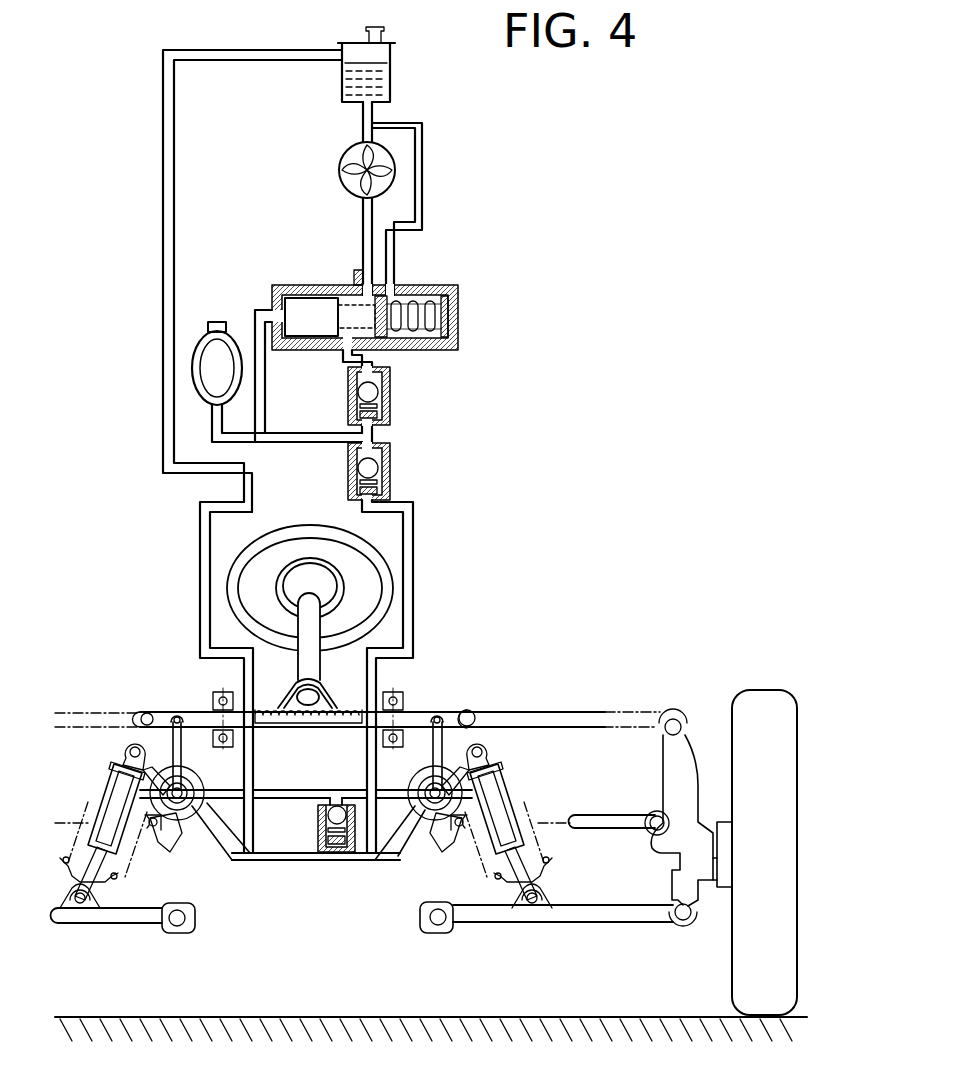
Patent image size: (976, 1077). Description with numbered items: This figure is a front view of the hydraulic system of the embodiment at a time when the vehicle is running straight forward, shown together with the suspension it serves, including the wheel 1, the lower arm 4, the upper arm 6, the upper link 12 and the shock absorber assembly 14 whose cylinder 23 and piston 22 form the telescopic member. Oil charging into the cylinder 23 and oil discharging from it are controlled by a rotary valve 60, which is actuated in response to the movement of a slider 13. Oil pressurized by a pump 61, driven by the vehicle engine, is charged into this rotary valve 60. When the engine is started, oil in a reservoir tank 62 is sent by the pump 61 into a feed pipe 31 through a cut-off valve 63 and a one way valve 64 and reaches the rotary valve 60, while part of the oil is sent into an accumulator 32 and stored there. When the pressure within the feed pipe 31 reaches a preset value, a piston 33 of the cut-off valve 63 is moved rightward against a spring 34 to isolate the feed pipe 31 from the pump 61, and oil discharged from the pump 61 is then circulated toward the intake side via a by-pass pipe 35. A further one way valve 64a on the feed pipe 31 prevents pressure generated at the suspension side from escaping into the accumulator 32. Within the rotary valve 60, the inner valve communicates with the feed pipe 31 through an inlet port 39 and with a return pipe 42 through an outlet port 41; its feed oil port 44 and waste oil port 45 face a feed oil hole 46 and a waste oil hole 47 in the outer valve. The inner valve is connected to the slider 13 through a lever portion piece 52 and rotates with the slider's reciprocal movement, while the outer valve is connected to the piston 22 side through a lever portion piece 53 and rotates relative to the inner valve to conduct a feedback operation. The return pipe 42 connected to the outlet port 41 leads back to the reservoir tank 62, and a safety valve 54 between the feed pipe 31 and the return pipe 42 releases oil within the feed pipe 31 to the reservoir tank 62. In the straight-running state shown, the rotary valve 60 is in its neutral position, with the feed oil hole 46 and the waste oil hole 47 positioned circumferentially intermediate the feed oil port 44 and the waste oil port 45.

The wheel 1 is at (760, 706).
The lower suspension arm 4 is at (580, 923).
The upper suspension arm 6 is at (617, 816).
The upper link 12 is at (626, 710).
The slider 13 is at (421, 712).
The shock absorber assembly 14 is at (532, 817).
The piston 22 is at (500, 770).
The cylinder 23 is at (478, 757).
The feed pipe 31 is at (414, 553).
The accumulator 32 is at (228, 328).
The piston 33 is at (312, 337).
The spring 34 is at (427, 346).
The by-pass pipe 35 is at (423, 178).
The inlet port 39 is at (208, 790).
The outlet port 41 is at (410, 858).
The return pipe 42 is at (200, 547).
The feed oil port 44 is at (163, 784).
The waste oil port 45 is at (186, 850).
The feed oil hole 46 is at (155, 830).
The waste oil hole 47 is at (296, 848).
The lever portion piece 52 is at (441, 720).
The lever portion piece 53 is at (462, 772).
The safety valve 54 is at (320, 830).
The rotary valve 60 is at (216, 830).
The pump 61 is at (339, 170).
The reservoir tank 62 is at (390, 78).
The cut-off valve 63 is at (377, 305).
The one way valve 64 is at (392, 402).
The one way valve 64a is at (392, 473).